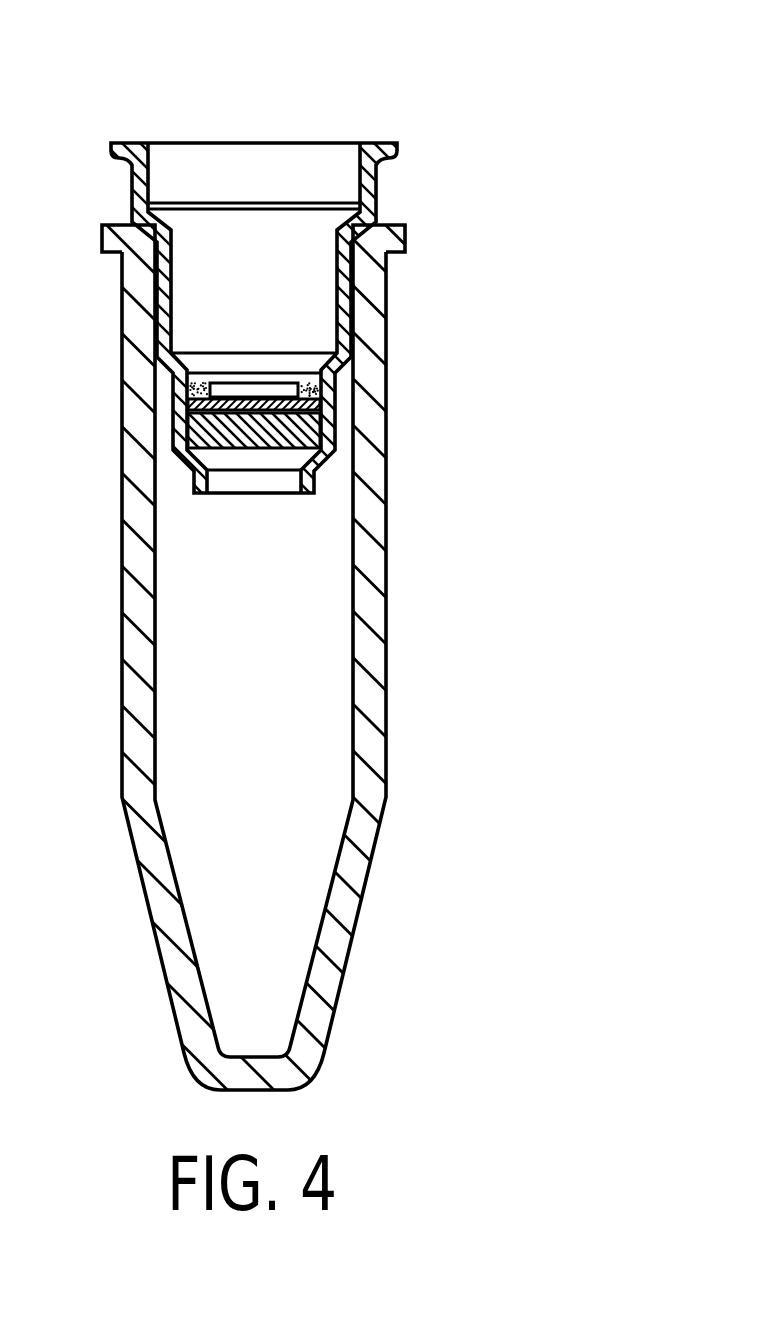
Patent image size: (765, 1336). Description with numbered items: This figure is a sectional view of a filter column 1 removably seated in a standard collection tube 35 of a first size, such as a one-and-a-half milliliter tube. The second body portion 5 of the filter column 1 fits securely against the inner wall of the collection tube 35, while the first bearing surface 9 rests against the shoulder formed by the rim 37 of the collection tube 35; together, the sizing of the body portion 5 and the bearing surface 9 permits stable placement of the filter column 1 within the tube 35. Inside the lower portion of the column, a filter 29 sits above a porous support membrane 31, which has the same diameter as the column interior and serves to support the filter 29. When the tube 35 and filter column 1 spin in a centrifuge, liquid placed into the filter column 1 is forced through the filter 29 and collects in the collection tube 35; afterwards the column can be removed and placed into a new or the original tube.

The filter column 1 is at (394, 101).
The second body portion 5 is at (160, 268).
The first bearing surface 9 is at (375, 217).
The filter 29 is at (312, 408).
The porous support membrane 31 is at (312, 428).
The collection tube 35 is at (375, 801).
The rim 37 is at (404, 250).